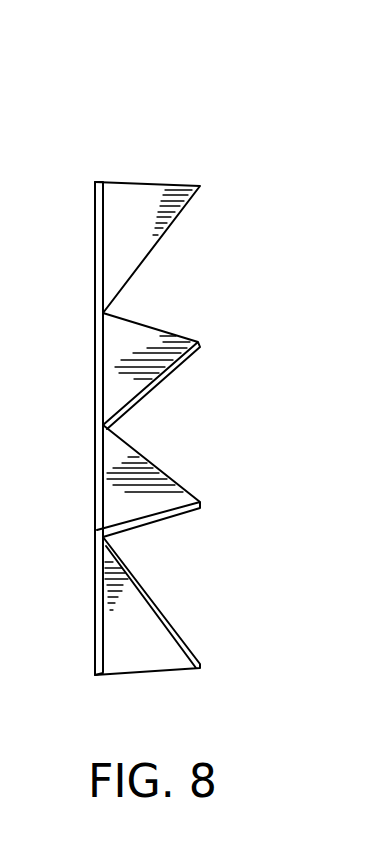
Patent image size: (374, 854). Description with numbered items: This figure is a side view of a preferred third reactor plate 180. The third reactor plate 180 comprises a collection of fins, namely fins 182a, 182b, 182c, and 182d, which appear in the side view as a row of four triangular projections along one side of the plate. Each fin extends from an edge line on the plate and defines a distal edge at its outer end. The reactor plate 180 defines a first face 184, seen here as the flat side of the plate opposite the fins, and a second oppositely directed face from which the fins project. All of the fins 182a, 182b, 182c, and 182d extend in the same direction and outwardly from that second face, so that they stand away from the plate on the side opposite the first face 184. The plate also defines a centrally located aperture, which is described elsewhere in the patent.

The third reactor plate 180 is at (202, 146).
The first face 184 is at (95, 237).
The fin 182a is at (133, 220).
The fin 182d is at (147, 358).
The fin 182b is at (140, 507).
The fin 182c is at (142, 643).